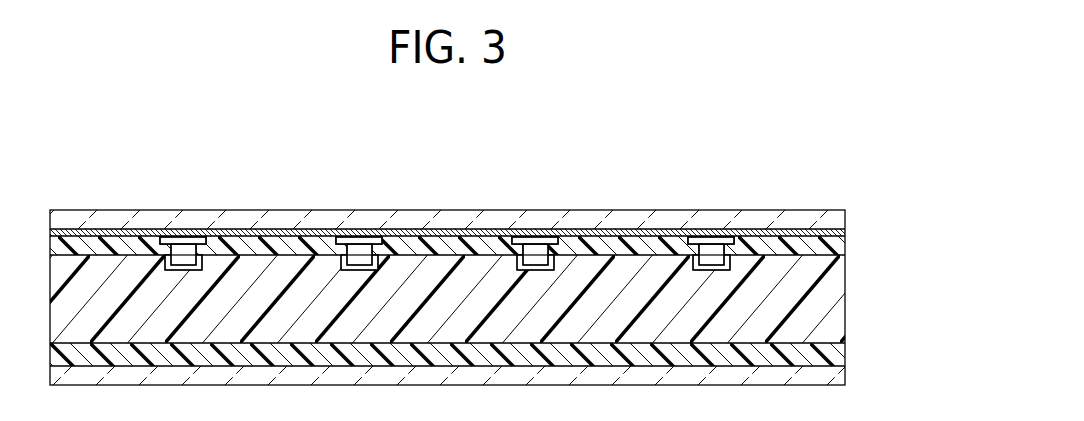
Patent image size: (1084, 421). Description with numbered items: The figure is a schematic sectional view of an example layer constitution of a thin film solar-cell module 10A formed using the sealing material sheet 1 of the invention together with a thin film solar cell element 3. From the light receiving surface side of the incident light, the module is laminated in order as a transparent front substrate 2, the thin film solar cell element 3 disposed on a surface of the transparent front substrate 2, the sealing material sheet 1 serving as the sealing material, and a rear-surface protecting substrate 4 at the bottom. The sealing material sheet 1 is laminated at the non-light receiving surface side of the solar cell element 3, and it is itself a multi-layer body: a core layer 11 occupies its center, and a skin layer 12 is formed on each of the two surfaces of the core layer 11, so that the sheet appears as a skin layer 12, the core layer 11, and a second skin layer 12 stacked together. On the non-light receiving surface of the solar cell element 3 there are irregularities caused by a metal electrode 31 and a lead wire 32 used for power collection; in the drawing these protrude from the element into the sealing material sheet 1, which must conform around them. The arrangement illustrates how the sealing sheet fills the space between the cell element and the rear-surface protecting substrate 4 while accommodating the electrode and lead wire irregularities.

The thin film solar-cell module 10A is at (826, 124).
The sealing material sheet 1 is at (503, 297).
The transparent front substrate 2 is at (833, 227).
The thin film solar cell element 3 is at (464, 233).
The rear-surface protecting substrate 4 is at (837, 377).
The core layer 11 is at (830, 292).
The skin layer 12 is at (835, 240).
The metal electrode 31 is at (180, 237).
The lead wire 32 is at (191, 256).